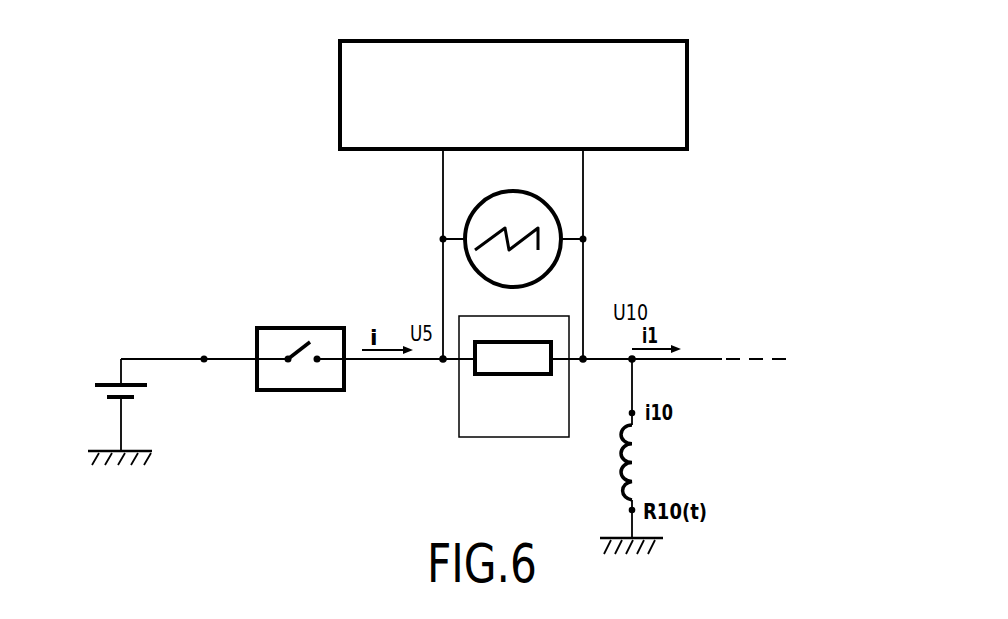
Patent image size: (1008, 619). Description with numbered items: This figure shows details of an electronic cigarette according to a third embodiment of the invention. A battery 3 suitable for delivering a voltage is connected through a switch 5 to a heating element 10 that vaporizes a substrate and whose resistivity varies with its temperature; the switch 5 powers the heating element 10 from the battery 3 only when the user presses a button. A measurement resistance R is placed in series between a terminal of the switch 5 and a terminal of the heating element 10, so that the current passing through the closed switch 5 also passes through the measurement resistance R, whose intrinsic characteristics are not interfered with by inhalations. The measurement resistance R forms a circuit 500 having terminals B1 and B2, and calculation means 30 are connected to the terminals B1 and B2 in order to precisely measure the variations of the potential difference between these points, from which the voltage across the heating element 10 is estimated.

The calculation means 30 is at (528, 111).
The switch 5 is at (298, 328).
The battery 3 is at (148, 386).
The circuit 500 is at (470, 437).
The measurement resistance R is at (512, 374).
The heating element 10 is at (621, 468).
The terminal B1 is at (439, 375).
The terminal B2 is at (632, 360).